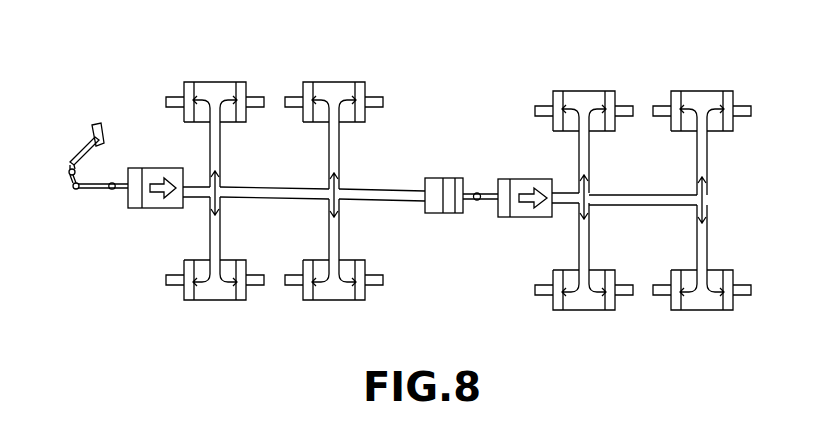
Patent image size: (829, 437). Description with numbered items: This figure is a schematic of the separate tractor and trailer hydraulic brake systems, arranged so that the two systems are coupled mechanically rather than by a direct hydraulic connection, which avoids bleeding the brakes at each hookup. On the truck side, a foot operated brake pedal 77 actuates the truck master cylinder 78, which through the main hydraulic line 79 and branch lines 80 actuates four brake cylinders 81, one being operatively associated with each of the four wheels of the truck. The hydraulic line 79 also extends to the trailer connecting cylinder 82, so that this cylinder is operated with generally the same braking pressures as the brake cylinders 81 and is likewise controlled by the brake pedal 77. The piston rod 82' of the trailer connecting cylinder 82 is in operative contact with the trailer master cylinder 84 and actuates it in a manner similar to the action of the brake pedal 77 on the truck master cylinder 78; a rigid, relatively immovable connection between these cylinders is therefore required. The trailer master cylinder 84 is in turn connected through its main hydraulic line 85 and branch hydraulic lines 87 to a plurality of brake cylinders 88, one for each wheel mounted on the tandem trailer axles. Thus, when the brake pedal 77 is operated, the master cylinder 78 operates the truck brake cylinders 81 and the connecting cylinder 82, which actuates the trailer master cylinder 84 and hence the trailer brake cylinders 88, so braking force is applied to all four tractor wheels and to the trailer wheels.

The brake pedal 77 is at (93, 127).
The master cylinder 78 is at (152, 208).
The hydraulic line 79 is at (307, 186).
The branch lines 80 is at (330, 157).
The brake cylinders 81 is at (218, 82).
The trailer connecting cylinder 82 is at (448, 160).
The piston rod 82' is at (473, 228).
The trailer master cylinder 84 is at (535, 217).
The main hydraulic line 85 is at (678, 195).
The branch hydraulic lines 87 is at (697, 167).
The brake cylinders 88 is at (600, 91).